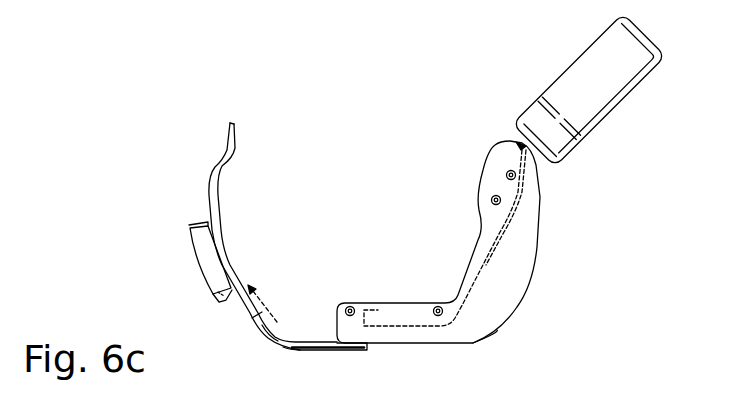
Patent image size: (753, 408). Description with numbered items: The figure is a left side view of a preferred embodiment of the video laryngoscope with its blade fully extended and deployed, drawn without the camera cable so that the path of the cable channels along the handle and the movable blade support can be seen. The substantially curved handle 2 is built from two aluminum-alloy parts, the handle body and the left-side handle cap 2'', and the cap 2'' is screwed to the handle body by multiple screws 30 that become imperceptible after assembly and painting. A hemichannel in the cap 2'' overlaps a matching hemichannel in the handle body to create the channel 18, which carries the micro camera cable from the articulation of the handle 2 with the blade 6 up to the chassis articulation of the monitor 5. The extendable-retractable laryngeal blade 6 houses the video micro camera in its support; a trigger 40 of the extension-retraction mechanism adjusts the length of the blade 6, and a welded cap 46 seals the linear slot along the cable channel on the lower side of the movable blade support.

The handle 2 is at (484, 245).
The left-side handle cap 2'' is at (537, 314).
The monitor 5 is at (568, 42).
The laryngeal blade 6 is at (240, 182).
The channel 18 is at (490, 247).
The screws 30 is at (506, 174).
The trigger 40 is at (222, 305).
The cap 46 is at (260, 340).